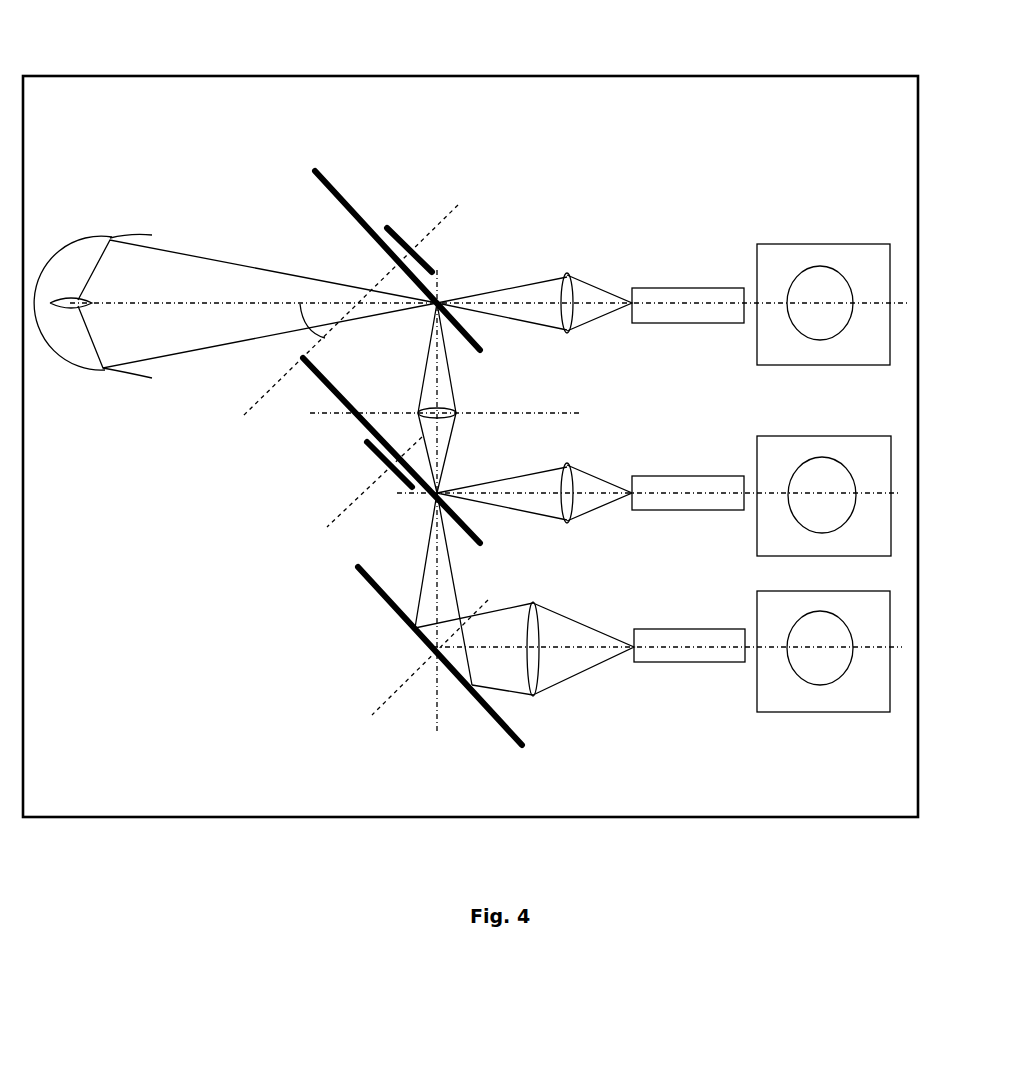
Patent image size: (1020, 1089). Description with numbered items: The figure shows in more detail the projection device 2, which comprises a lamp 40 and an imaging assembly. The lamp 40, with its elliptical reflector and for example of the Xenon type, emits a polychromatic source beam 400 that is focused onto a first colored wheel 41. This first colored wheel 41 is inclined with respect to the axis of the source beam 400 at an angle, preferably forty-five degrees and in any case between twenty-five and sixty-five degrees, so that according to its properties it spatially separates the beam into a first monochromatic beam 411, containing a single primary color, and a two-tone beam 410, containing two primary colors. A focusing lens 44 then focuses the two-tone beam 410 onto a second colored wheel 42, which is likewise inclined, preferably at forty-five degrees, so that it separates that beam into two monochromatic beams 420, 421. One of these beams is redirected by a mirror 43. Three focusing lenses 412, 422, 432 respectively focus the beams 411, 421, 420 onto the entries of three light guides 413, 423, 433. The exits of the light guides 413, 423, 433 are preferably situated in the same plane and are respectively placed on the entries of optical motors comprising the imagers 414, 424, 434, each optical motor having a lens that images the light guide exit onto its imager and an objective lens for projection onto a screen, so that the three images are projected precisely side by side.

The device 2 is at (367, 77).
The lamp 40 is at (120, 238).
The polychromatic source beam 400 is at (190, 270).
The first colored wheel 41 is at (327, 177).
The two-tone beam 410 is at (430, 363).
The first monochromatic beam 411 is at (520, 313).
The focusing lens 412 is at (568, 330).
The light guide 413 is at (677, 315).
The imager 414 is at (773, 250).
The second colored wheel 42 is at (347, 395).
The monochromatic beam 420 is at (437, 557).
The monochromatic beam 421 is at (502, 498).
The focusing lens 422 is at (567, 517).
The light guide 423 is at (682, 510).
The imager 424 is at (757, 437).
The mirror 43 is at (372, 588).
The focusing lens 432 is at (538, 697).
The light guide 433 is at (688, 663).
The imager 434 is at (780, 712).
The focusing lens 44 is at (458, 415).